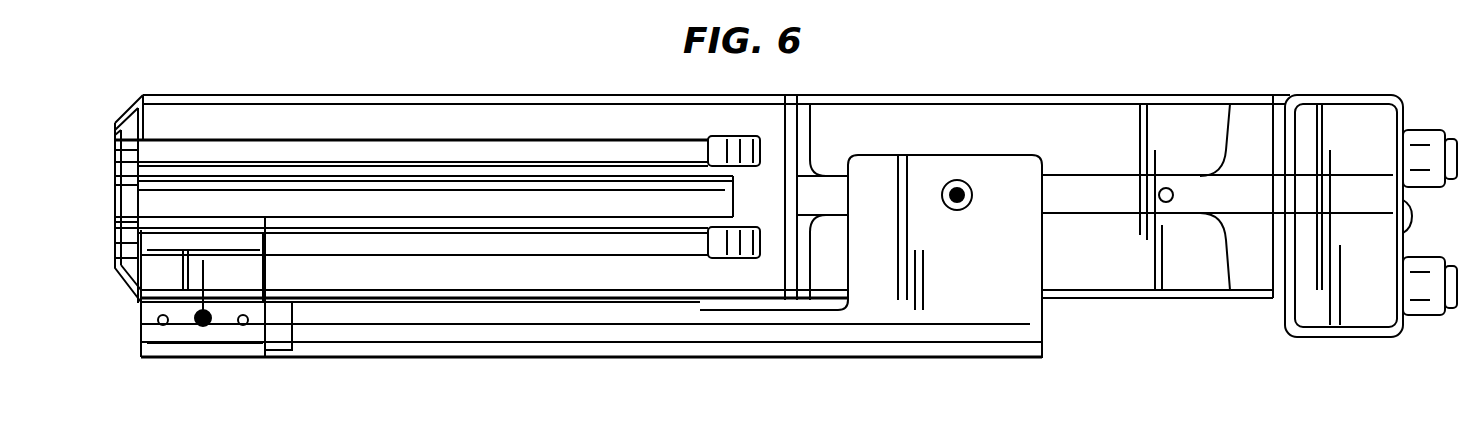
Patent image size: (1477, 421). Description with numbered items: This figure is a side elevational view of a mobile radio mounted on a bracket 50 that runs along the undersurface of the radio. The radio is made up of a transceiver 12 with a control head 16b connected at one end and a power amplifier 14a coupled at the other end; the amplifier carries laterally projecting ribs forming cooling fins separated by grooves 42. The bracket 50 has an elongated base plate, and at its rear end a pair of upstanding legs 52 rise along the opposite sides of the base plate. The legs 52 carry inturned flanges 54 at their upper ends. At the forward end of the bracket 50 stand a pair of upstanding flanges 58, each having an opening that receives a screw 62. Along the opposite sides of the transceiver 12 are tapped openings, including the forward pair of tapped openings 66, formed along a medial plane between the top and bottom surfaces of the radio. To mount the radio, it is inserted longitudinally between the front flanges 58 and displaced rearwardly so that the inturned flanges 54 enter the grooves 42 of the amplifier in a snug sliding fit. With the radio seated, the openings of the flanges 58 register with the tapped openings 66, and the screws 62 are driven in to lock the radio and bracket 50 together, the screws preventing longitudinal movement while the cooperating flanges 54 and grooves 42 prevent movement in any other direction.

The transceiver 12 is at (970, 95).
The power amplifier 14a is at (378, 93).
The control head 16b is at (1332, 93).
The grooves 42 is at (372, 245).
The bracket 50 is at (745, 358).
The upstanding legs 52 is at (140, 318).
The inturned flanges 54 is at (116, 243).
The upstanding flanges 58 is at (1022, 300).
The screw 62 is at (963, 209).
The tapped openings 66 is at (1160, 190).